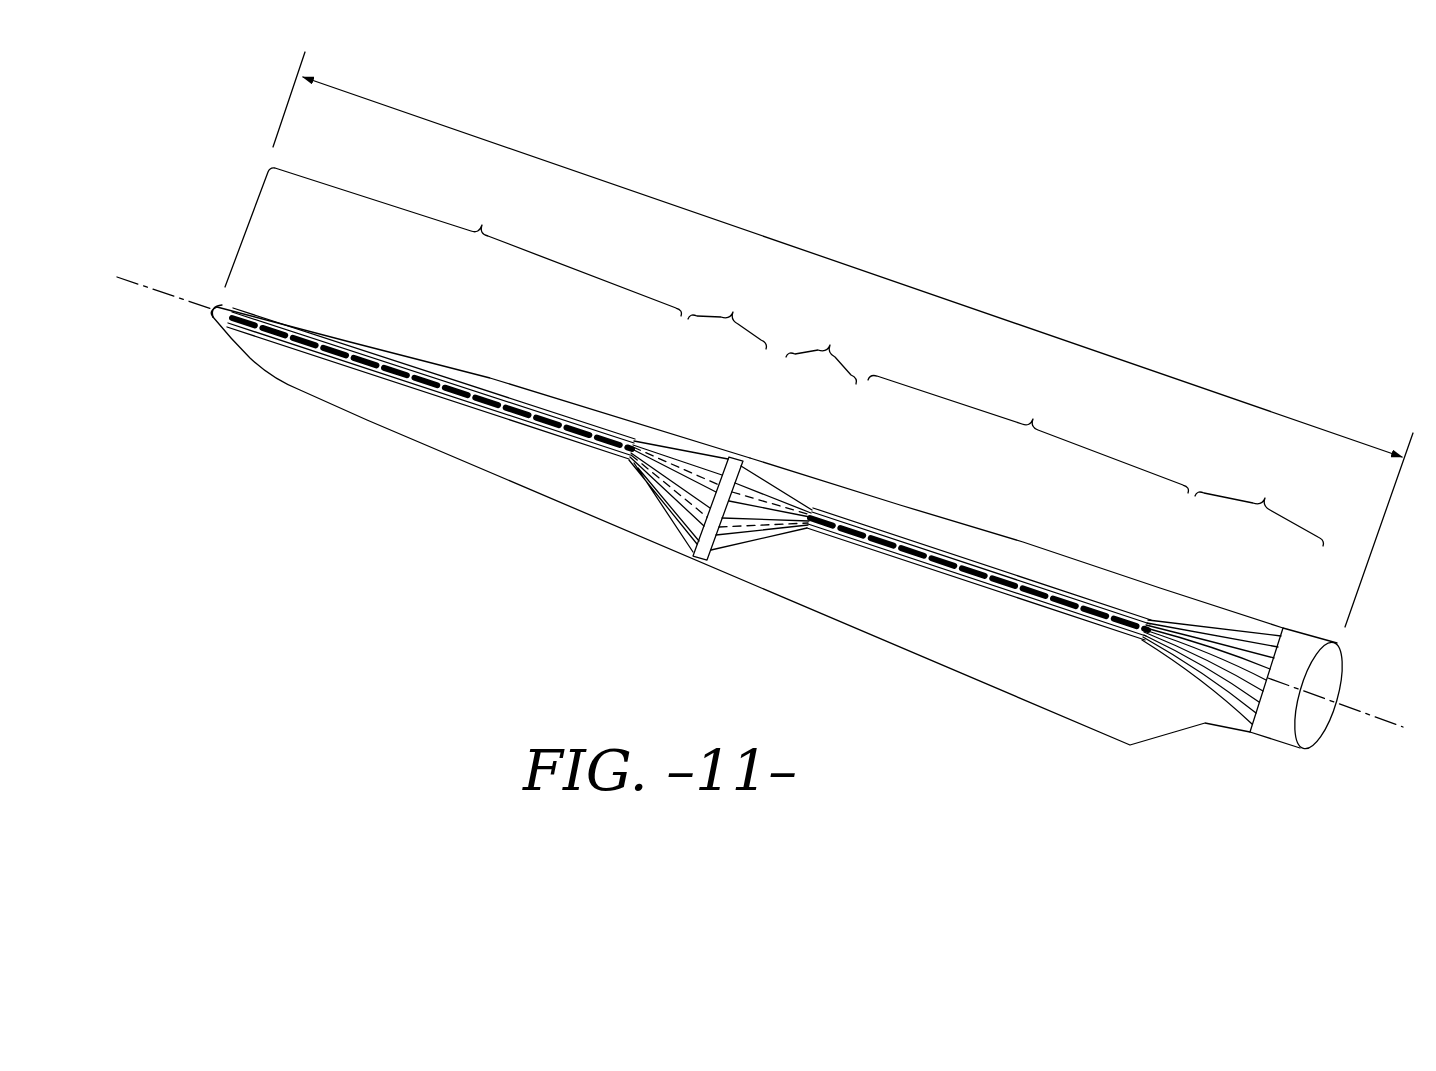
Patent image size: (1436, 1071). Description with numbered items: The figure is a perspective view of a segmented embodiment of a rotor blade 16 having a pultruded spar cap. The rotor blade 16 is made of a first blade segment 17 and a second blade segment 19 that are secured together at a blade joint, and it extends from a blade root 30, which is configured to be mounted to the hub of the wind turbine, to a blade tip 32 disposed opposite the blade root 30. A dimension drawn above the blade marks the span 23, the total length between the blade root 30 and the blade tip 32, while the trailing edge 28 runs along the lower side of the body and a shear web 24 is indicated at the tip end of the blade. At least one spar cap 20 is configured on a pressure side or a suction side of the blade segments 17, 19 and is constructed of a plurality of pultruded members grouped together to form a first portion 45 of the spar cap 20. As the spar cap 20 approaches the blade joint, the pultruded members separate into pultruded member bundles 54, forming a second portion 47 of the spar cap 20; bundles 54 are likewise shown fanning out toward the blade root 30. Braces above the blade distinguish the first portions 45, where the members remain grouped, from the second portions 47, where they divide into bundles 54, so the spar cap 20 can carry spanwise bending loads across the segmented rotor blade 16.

The rotor blade 16 is at (1213, 270).
The first blade segment 17 is at (1023, 540).
The second blade segment 19 is at (490, 378).
The spar cap 20 is at (392, 381).
The span 23 is at (953, 300).
The shear web 24 is at (193, 305).
The trailing edge 28 is at (1067, 720).
The blade root 30 is at (1278, 720).
The blade tip 32 is at (217, 307).
The first portion of the spar cap 45 is at (706, 330).
The second portion of the spar cap 47 is at (1005, 411).
The pultruded member bundles 54 is at (778, 532).